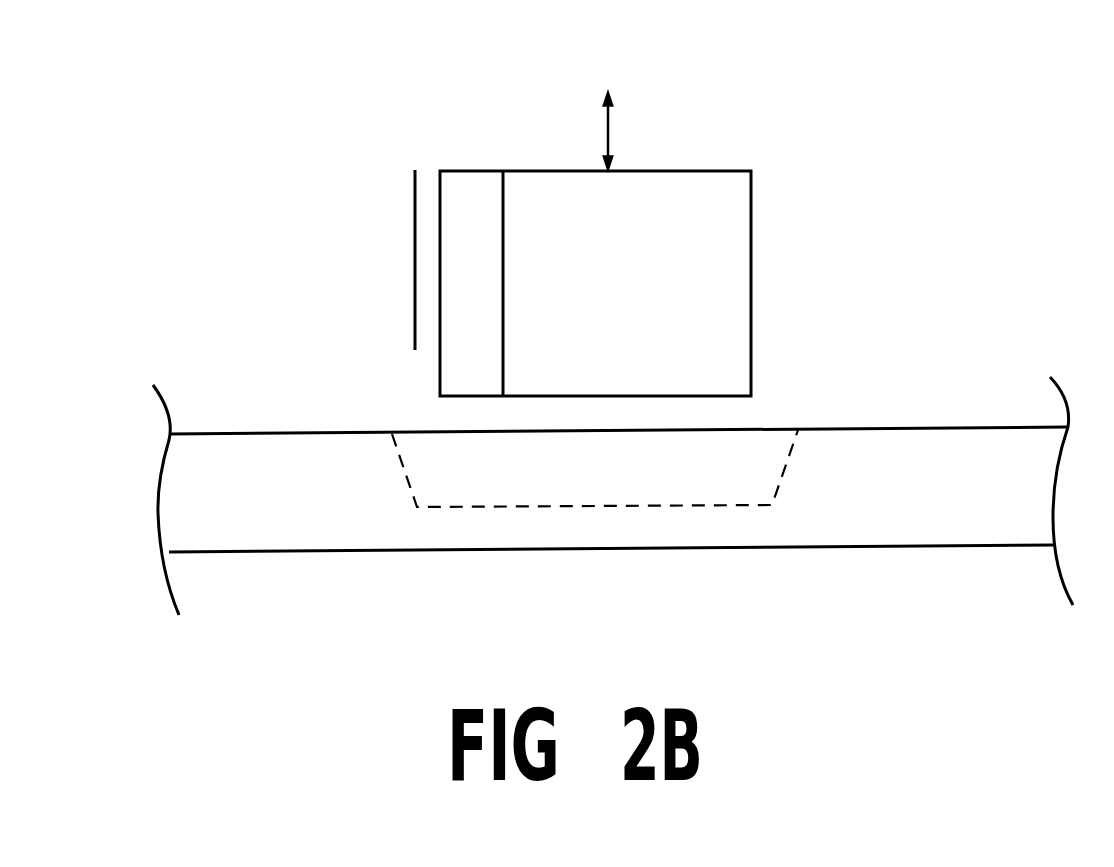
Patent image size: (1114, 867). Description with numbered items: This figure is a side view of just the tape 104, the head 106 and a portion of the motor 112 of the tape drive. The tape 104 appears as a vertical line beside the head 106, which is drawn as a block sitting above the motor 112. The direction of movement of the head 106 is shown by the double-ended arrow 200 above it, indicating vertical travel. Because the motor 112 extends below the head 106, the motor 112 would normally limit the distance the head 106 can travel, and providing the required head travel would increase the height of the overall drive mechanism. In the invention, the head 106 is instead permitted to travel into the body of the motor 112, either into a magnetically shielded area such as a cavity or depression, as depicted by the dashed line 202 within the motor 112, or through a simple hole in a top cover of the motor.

The tape 104 is at (415, 158).
The head 106 is at (733, 170).
The motor 112 is at (975, 427).
The double-ended arrow 200 is at (608, 133).
The dashed line 202 is at (783, 470).